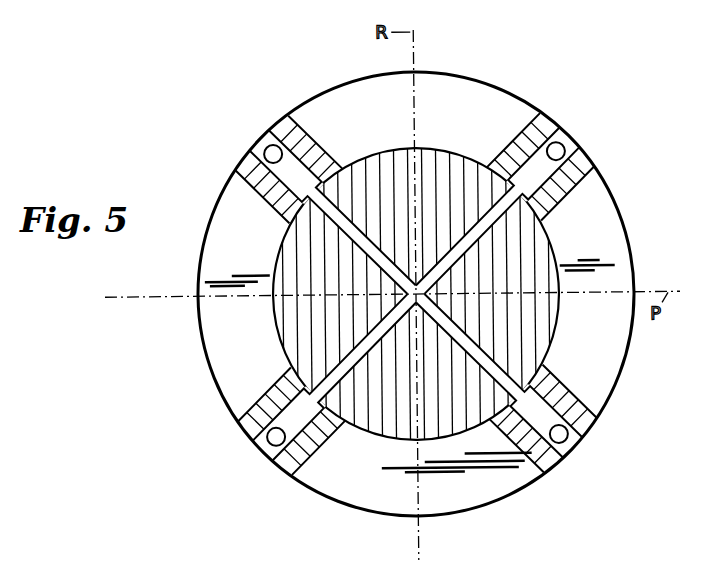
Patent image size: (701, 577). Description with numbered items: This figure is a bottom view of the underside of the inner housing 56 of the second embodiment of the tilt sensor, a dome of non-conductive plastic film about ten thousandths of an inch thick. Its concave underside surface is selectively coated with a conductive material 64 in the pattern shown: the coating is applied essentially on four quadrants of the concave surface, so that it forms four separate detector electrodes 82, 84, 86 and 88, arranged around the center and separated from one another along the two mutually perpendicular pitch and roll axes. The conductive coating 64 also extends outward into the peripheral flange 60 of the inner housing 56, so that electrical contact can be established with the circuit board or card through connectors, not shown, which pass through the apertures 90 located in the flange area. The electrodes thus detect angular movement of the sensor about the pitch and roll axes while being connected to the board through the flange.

The inner housing 56 is at (598, 200).
The peripheral flange 60 is at (463, 84).
The conductive material 64 is at (398, 168).
The detector electrode 82 is at (457, 170).
The detector electrode 84 is at (548, 333).
The detector electrode 86 is at (375, 432).
The detector electrode 88 is at (284, 250).
The apertures 90 is at (266, 146).